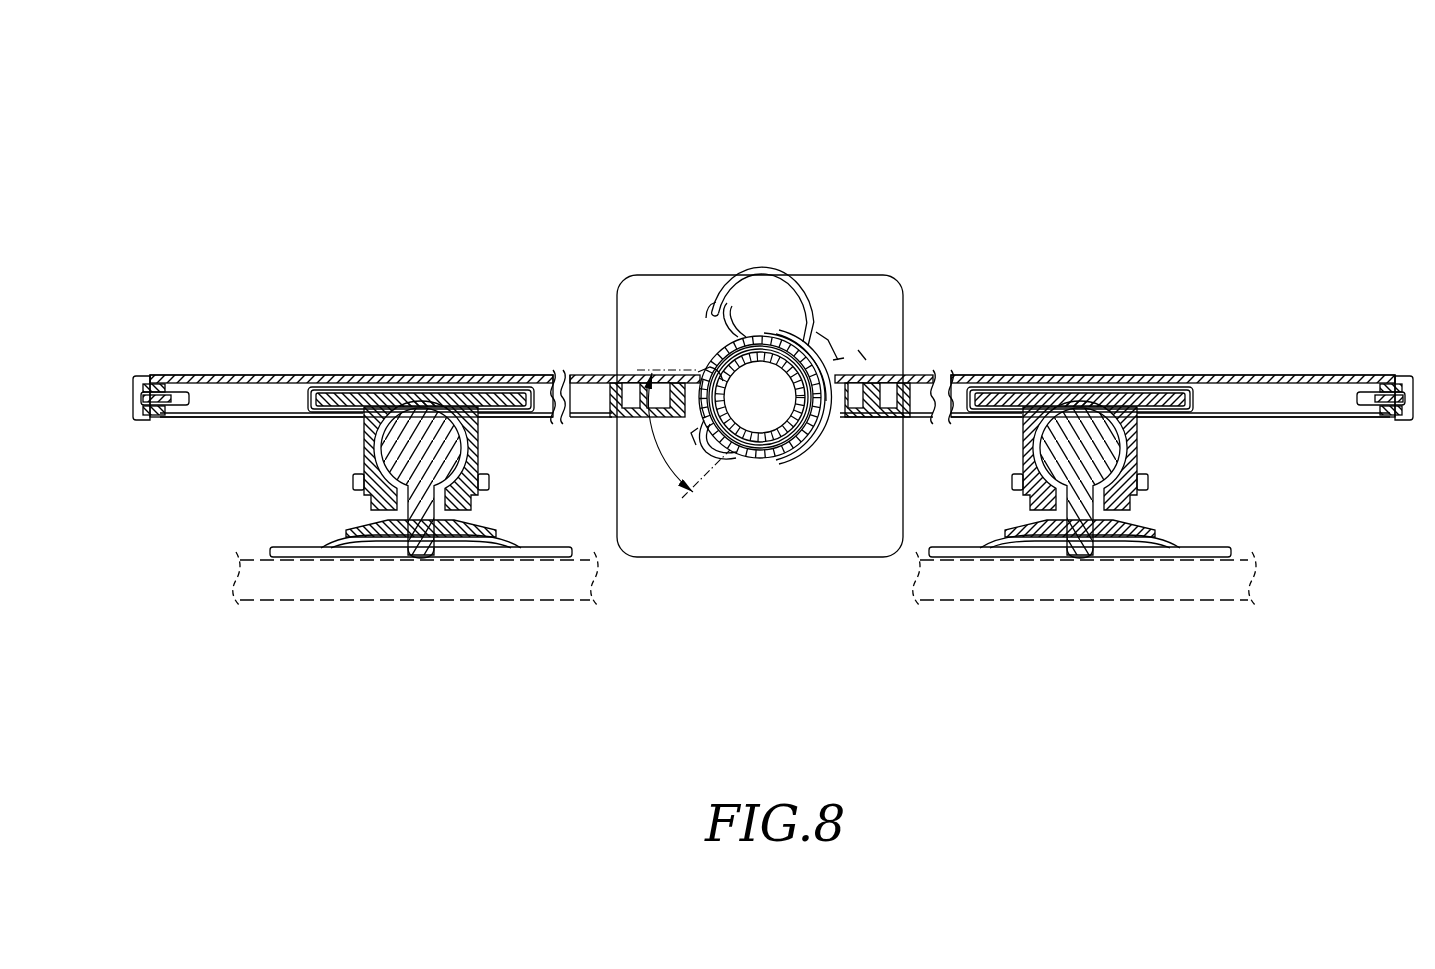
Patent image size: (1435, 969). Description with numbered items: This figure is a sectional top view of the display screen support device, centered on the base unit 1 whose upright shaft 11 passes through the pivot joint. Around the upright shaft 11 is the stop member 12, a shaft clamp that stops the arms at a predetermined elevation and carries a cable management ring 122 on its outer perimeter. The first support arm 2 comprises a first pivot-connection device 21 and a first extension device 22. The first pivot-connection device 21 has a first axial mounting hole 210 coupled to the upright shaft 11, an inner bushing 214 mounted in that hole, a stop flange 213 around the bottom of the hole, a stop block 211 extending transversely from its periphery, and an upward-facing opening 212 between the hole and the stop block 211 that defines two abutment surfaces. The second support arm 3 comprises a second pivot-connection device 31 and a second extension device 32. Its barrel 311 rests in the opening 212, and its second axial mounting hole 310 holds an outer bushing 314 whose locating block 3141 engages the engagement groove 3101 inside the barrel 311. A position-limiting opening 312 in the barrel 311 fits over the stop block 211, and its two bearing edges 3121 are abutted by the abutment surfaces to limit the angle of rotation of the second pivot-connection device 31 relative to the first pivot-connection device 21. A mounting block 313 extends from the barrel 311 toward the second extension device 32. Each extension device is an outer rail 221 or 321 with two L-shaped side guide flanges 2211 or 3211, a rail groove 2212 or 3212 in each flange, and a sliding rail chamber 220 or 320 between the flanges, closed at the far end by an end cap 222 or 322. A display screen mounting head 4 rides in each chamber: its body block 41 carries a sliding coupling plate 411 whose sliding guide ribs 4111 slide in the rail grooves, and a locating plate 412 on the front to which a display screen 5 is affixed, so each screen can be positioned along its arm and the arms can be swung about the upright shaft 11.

The base unit 1 is at (767, 223).
The upright shaft 11 is at (810, 350).
The stop member 12 is at (770, 213).
The cable management ring 122 is at (757, 264).
The first support arm 2 is at (867, 622).
The first pivot-connection device 21 is at (827, 453).
The first axial mounting hole 210 is at (793, 463).
The stop block 211 is at (583, 418).
The opening 212 is at (757, 455).
The stop flange 213 is at (732, 463).
The inner bushing 214 is at (853, 450).
The first extension device 22 is at (349, 355).
The sliding rail chamber 220 is at (277, 397).
The outer rail 221 is at (257, 378).
The end cap 222 is at (150, 382).
The side guide flange 2211 is at (300, 415).
The rail groove 2212 is at (205, 402).
The second support arm 3 is at (841, 211).
The second pivot-connection device 31 is at (817, 350).
The second axial mounting hole 310 is at (753, 337).
The barrel 311 is at (713, 350).
The position-limiting opening 312 is at (631, 188).
The bearing edge 3121 is at (710, 385).
The mounting block 313 is at (907, 418).
The outer bushing 314 is at (823, 350).
The locating block 3141 is at (847, 350).
The engagement groove 3101 is at (867, 350).
The second extension device 32 is at (1173, 355).
The sliding rail chamber 320 is at (1247, 397).
The outer rail 321 is at (1283, 378).
The end cap 322 is at (1397, 385).
The side guide flange 3211 is at (1222, 417).
The rail groove 3212 is at (1322, 405).
The display screen mounting head 4 is at (471, 306).
The body block 41 is at (450, 415).
The sliding coupling plate 411 is at (360, 402).
The sliding guide rib 4111 is at (333, 408).
The locating plate 412 is at (298, 550).
The display screen 5 is at (427, 577).